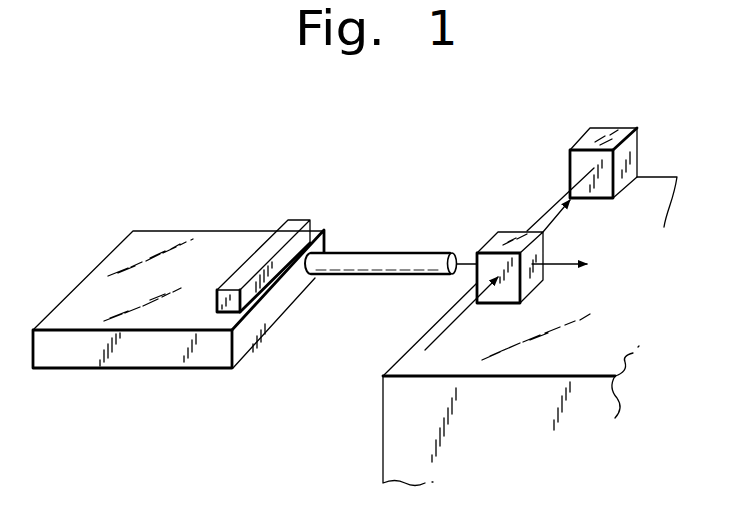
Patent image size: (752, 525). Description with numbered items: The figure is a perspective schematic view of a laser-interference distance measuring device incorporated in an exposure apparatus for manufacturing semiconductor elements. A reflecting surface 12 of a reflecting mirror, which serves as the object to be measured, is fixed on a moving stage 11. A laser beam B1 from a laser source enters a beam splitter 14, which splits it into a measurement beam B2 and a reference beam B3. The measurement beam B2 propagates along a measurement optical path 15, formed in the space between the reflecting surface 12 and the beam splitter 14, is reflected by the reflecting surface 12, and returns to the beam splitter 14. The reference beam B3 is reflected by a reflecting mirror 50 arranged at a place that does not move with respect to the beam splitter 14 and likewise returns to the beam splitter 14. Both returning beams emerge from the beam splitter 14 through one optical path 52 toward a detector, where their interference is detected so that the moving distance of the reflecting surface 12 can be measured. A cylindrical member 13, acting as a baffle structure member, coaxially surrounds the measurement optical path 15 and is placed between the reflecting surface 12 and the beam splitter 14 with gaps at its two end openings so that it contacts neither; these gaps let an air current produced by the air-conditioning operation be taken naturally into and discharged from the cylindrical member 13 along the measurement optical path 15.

The moving stage 11 is at (158, 352).
The reflecting surface 12 is at (310, 227).
The cylindrical member 13 is at (388, 255).
The beam splitter 14 is at (508, 237).
The measurement optical path 15 is at (457, 266).
The reflecting mirror 50 is at (610, 132).
The optical path 52 is at (565, 266).
The laser beam B1 is at (461, 313).
The measurement beam B2 is at (468, 260).
The reference beam B3 is at (555, 207).